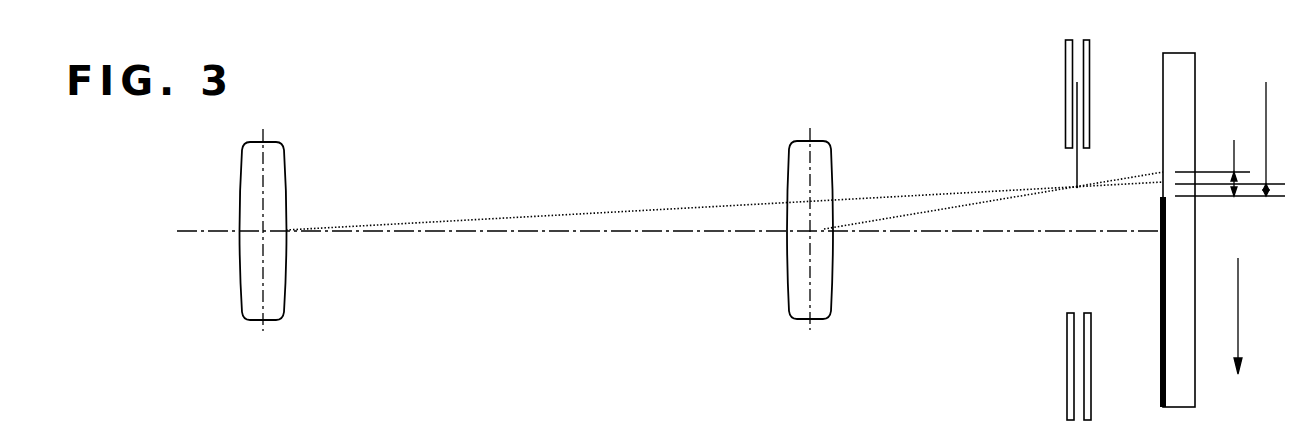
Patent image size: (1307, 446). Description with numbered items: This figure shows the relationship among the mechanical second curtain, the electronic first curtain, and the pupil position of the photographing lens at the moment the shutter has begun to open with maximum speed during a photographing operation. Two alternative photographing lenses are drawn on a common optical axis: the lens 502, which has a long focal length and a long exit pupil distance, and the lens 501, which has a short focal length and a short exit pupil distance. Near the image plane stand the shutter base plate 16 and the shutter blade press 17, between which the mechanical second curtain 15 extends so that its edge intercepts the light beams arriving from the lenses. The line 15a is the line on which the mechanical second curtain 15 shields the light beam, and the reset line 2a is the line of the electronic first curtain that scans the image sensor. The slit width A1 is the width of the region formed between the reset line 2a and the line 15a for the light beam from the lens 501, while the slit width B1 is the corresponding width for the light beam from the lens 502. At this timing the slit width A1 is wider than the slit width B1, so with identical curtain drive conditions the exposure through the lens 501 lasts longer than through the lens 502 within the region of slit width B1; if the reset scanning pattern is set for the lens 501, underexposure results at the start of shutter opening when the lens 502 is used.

The lens 502 is at (287, 160).
The lens 501 is at (790, 163).
The shutter base plate 16 is at (1064, 45).
The shutter blade press 17 is at (1092, 48).
The mechanical second curtain 15 is at (1079, 163).
The line 15a is at (1076, 187).
The reset line 2a is at (1160, 198).
The slit width A1 is at (1238, 155).
The slit width B1 is at (1271, 124).